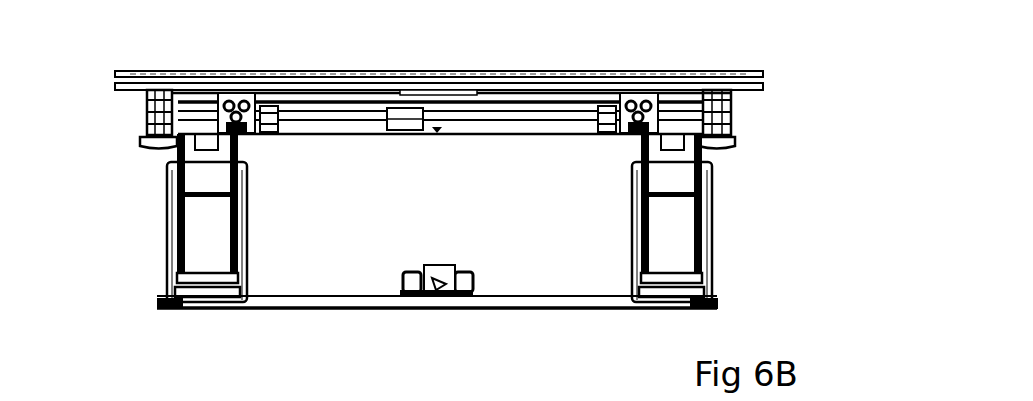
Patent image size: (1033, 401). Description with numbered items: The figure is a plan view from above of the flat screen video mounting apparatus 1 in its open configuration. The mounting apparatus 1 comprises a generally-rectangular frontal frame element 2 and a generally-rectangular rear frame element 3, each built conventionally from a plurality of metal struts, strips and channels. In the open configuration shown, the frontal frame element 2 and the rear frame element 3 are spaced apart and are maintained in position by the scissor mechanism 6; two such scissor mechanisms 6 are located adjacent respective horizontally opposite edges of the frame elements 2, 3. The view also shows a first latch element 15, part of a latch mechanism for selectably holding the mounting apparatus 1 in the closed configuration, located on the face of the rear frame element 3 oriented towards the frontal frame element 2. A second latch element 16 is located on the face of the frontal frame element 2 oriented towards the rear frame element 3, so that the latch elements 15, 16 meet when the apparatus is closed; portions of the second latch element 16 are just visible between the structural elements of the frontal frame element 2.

The mounting apparatus 1 is at (126, 40).
The frontal frame element 2 is at (383, 62).
The rear frame element 3 is at (568, 315).
The scissor mechanism 6 is at (152, 212).
The first latch element 15 is at (438, 258).
The second latch element 16 is at (517, 92).